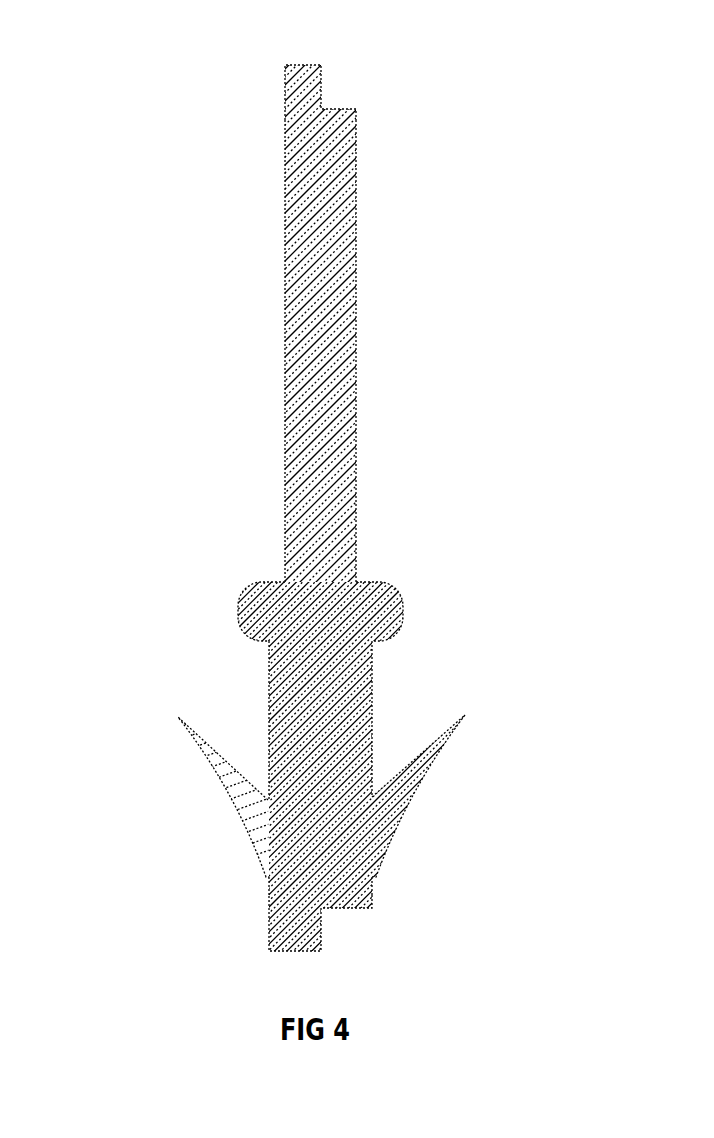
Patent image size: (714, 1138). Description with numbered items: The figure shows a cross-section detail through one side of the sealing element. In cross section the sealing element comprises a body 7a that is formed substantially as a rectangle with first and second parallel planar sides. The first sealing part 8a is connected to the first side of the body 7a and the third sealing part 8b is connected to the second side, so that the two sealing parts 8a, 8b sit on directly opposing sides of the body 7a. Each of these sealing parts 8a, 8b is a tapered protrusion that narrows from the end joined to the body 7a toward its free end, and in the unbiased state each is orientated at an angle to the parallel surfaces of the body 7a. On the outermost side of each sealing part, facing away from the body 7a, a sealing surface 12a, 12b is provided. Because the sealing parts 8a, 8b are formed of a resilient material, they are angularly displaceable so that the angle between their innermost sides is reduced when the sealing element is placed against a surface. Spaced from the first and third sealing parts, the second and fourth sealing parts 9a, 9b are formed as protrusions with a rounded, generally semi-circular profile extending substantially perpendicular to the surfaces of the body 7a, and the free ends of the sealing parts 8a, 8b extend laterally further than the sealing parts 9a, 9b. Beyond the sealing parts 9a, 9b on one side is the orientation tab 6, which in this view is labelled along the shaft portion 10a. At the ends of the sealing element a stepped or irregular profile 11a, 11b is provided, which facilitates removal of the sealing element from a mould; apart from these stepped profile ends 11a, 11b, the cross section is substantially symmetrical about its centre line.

The orientation tab 6 is at (318, 335).
The stepped profile end 11b is at (328, 98).
The shaft portion 10a is at (315, 443).
The fourth sealing part 9b is at (240, 597).
The second sealing part 9a is at (398, 595).
The body 7a is at (327, 733).
The stepped profile end 11a is at (327, 922).
The sealing surface 12b is at (203, 763).
The third sealing part 8b is at (247, 812).
The sealing surface 12a is at (437, 763).
The first sealing part 8a is at (392, 810).